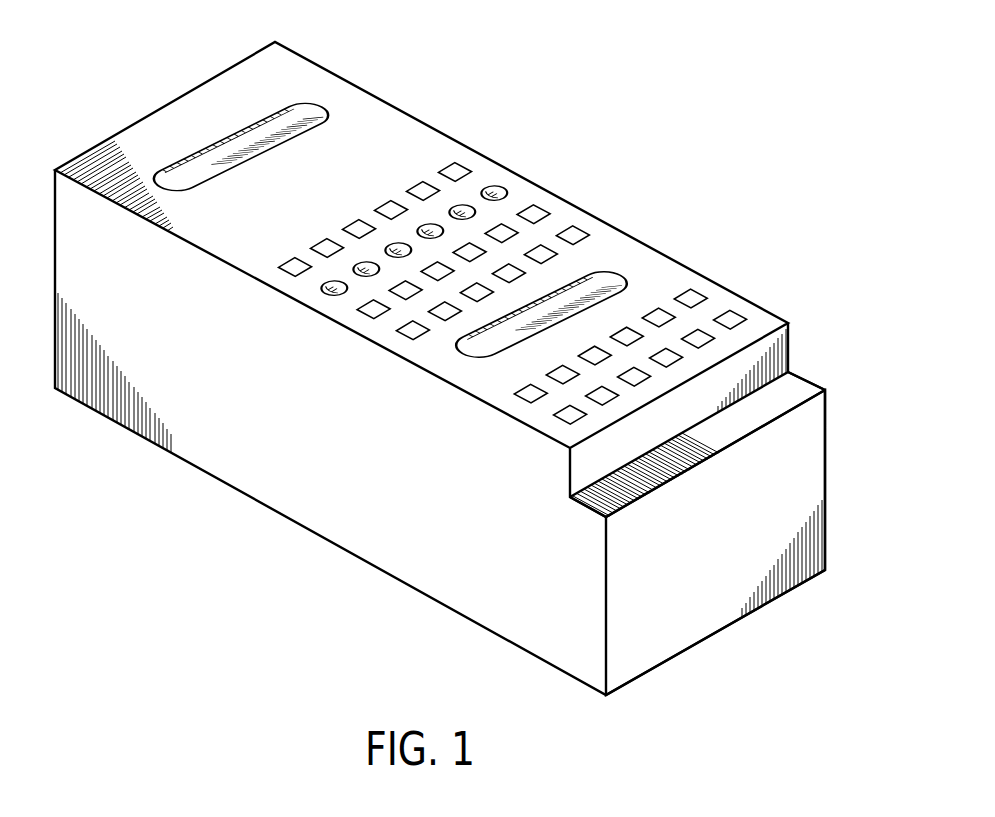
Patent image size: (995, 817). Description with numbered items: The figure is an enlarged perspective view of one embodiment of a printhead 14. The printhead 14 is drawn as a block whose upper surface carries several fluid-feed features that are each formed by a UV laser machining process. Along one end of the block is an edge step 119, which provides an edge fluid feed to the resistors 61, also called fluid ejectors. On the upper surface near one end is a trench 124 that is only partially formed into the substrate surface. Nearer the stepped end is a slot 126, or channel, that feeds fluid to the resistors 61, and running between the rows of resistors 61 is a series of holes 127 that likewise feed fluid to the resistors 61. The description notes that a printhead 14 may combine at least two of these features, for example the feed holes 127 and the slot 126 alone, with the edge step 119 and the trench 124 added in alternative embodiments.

The printhead 14 is at (372, 40).
The resistors 61 is at (453, 167).
The edge step 119 is at (816, 346).
The trench 124 is at (268, 128).
The slot 126 is at (597, 280).
The holes 127 is at (490, 188).